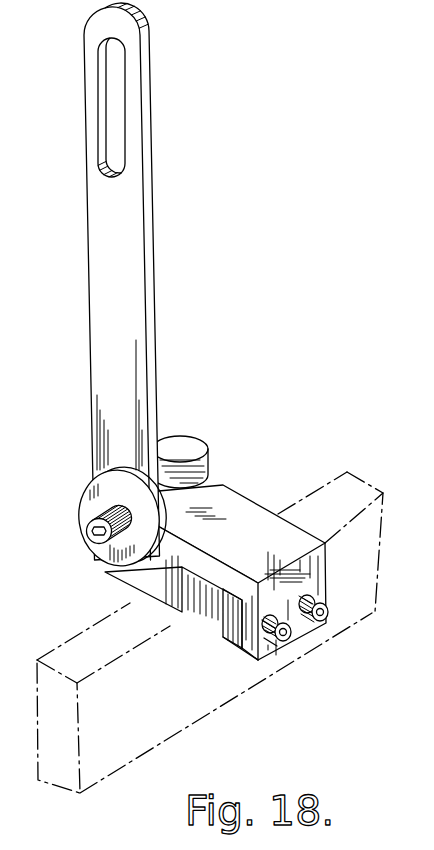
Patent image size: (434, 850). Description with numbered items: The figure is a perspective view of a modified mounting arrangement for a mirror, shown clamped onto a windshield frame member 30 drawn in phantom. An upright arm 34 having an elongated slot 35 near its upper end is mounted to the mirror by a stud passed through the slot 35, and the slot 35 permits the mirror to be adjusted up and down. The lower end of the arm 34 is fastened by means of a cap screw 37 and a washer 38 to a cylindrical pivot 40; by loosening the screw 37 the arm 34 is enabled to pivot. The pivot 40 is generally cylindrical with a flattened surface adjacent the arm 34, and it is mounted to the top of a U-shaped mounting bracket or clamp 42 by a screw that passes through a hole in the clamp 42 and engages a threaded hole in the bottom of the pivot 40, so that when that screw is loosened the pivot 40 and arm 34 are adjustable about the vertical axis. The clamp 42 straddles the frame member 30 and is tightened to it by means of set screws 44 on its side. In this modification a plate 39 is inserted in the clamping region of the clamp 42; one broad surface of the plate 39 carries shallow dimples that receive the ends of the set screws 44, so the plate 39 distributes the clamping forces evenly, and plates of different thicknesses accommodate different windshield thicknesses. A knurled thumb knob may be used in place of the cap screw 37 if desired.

The bar 30 is at (281, 453).
The arm 34 is at (92, 322).
The elongated slot 35 is at (102, 158).
The cap screw 37 is at (110, 552).
The washer 38 is at (92, 474).
The plate 39 is at (228, 642).
The cylindrical pivot 40 is at (205, 457).
The U-shaped mounting bracket or clamp 42 is at (256, 505).
The set screws 44 is at (328, 621).